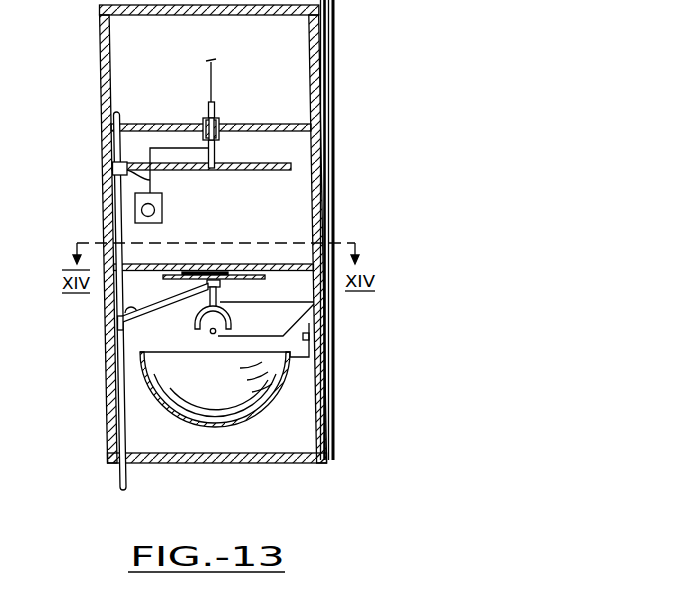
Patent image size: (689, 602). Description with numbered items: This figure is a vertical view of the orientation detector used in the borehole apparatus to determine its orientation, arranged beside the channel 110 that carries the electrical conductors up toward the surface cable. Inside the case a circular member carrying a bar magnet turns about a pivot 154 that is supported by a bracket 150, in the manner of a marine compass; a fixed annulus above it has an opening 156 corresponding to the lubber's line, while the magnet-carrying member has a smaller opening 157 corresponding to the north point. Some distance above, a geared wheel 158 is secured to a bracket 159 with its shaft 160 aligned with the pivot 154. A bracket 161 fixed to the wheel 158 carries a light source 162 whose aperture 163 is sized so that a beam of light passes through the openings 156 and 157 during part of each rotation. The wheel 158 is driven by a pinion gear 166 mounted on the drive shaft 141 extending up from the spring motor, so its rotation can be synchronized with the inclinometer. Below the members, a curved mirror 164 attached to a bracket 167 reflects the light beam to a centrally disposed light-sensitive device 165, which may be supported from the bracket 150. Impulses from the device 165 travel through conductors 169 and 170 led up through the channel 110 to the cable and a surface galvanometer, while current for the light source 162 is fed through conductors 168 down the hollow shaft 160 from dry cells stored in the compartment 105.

The compartment 105 is at (244, 105).
The channel 110 is at (318, 85).
The drive shaft 141 is at (119, 397).
The bracket 150 is at (117, 313).
The pivot 154 is at (220, 283).
The opening 156 is at (153, 262).
The opening 157 is at (178, 282).
The geared wheel 158 is at (292, 164).
The bracket 159 is at (288, 122).
The shaft 160 is at (222, 146).
The bracket 161 is at (140, 180).
The light source 162 is at (162, 206).
The aperture 163 is at (150, 225).
The curved mirror 164 is at (258, 410).
The light-sensitive device 165 is at (196, 324).
The pinion gear 166 is at (112, 164).
The bracket 167 is at (310, 350).
The conductors 168 is at (197, 128).
The conductor 169 is at (283, 302).
The conductor 170 is at (316, 313).